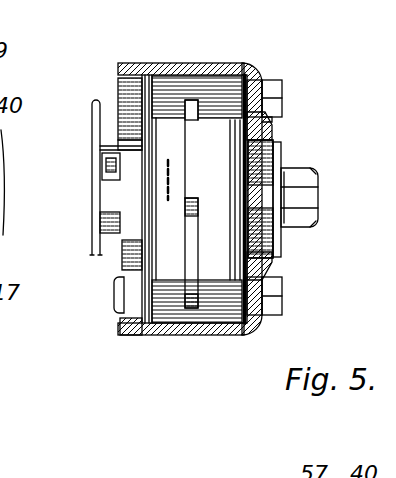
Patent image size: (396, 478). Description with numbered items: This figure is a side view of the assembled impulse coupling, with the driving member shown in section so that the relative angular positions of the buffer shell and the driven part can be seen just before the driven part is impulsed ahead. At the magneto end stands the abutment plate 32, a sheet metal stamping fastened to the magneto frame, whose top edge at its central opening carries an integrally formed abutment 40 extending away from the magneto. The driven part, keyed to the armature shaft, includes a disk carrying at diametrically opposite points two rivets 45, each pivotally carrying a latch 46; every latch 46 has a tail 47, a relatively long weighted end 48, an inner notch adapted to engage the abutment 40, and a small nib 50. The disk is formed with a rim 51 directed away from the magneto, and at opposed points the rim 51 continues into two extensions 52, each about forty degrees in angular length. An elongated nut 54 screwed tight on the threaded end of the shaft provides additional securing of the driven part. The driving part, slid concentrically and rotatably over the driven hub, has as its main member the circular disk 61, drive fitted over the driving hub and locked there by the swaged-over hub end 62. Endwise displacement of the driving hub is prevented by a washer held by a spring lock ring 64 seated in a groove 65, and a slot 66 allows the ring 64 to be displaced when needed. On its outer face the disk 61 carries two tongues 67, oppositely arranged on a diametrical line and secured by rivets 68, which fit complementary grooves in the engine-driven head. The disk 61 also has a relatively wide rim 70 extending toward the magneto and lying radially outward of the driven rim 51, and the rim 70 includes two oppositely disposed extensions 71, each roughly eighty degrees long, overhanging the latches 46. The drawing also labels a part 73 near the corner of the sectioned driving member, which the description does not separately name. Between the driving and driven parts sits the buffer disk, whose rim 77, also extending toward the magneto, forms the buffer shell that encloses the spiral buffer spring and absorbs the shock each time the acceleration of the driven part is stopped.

The abutment plate 32 is at (97, 101).
The abutment 40 is at (120, 146).
The rivets 45 is at (183, 265).
The latch 46 is at (103, 168).
The tail 47 is at (123, 257).
The weighted end 48 is at (28, 148).
The nib 50 is at (124, 126).
The rim 51 is at (167, 282).
The extensions 52 is at (188, 122).
The elongated nut 54 is at (305, 193).
The circular disk 61 is at (273, 119).
The swaged end 62 is at (273, 145).
The spring lock ring 64 is at (276, 158).
The groove 65 is at (271, 259).
The slot 66 is at (297, 203).
The tongues 67 is at (266, 84).
The rivets 68 is at (268, 92).
The rim 70 is at (162, 110).
The extensions 71 is at (126, 63).
The housing wall 73 is at (232, 72).
The rim 77 is at (228, 333).